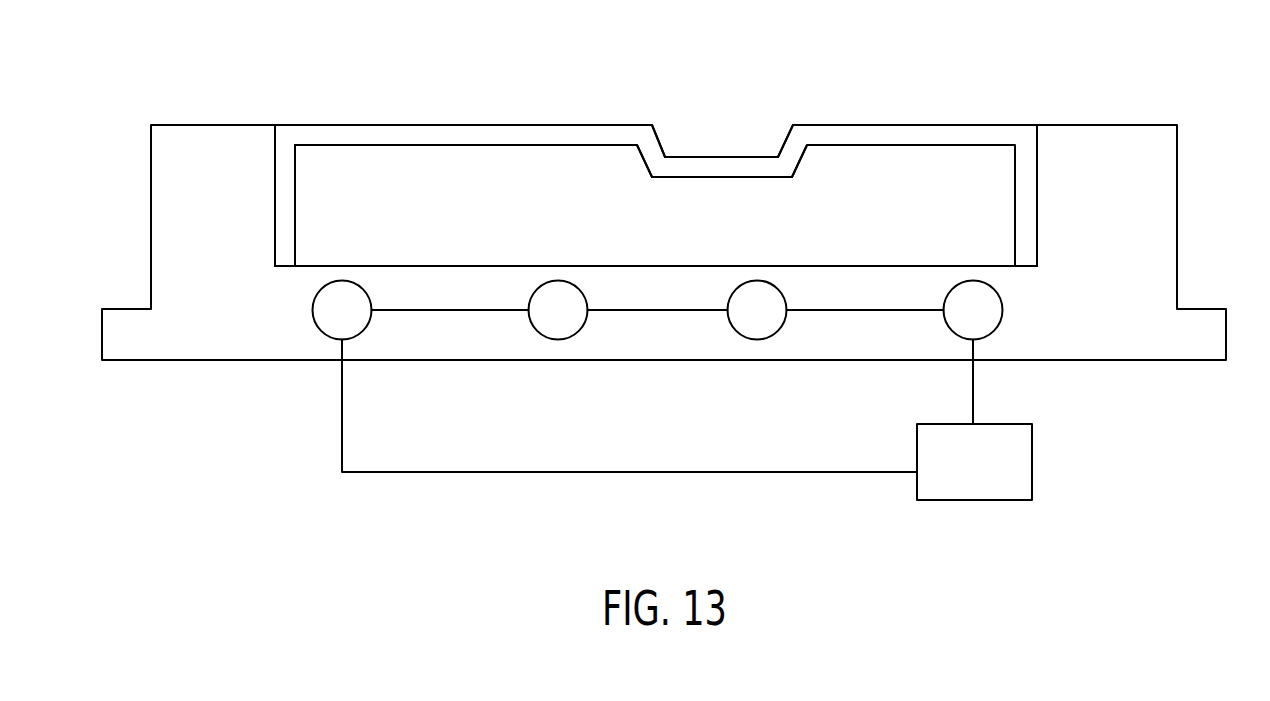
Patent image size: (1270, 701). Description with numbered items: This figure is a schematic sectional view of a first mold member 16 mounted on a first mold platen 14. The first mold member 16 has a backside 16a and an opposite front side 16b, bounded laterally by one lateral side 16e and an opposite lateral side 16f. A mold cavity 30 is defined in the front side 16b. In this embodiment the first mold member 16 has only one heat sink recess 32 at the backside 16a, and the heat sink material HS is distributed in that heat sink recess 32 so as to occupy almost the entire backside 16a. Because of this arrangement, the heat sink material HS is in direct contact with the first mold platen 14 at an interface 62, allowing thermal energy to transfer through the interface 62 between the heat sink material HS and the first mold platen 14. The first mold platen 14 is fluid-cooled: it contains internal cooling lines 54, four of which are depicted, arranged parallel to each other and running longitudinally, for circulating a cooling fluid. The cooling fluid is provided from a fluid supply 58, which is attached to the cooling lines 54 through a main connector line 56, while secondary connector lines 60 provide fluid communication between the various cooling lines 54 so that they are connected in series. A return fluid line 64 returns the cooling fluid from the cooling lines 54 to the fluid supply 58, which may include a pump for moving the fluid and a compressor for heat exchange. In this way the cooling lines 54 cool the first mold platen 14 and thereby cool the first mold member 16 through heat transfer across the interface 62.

The first mold platen 14 is at (1137, 175).
The first mold member 16 is at (992, 137).
The backside 16a is at (311, 271).
The front side 16b is at (917, 116).
The lateral side 16e is at (1039, 221).
The lateral side 16f is at (273, 213).
The mold cavity 30 is at (750, 150).
The heat sink recess 32 is at (299, 193).
The heat sink material HS is at (490, 172).
The interface 62 is at (402, 259).
The cooling lines 54 is at (327, 317).
The secondary connector lines 60 is at (449, 310).
The main connector line 56 is at (975, 380).
The return fluid line 64 is at (627, 472).
The fluid supply 58 is at (993, 486).